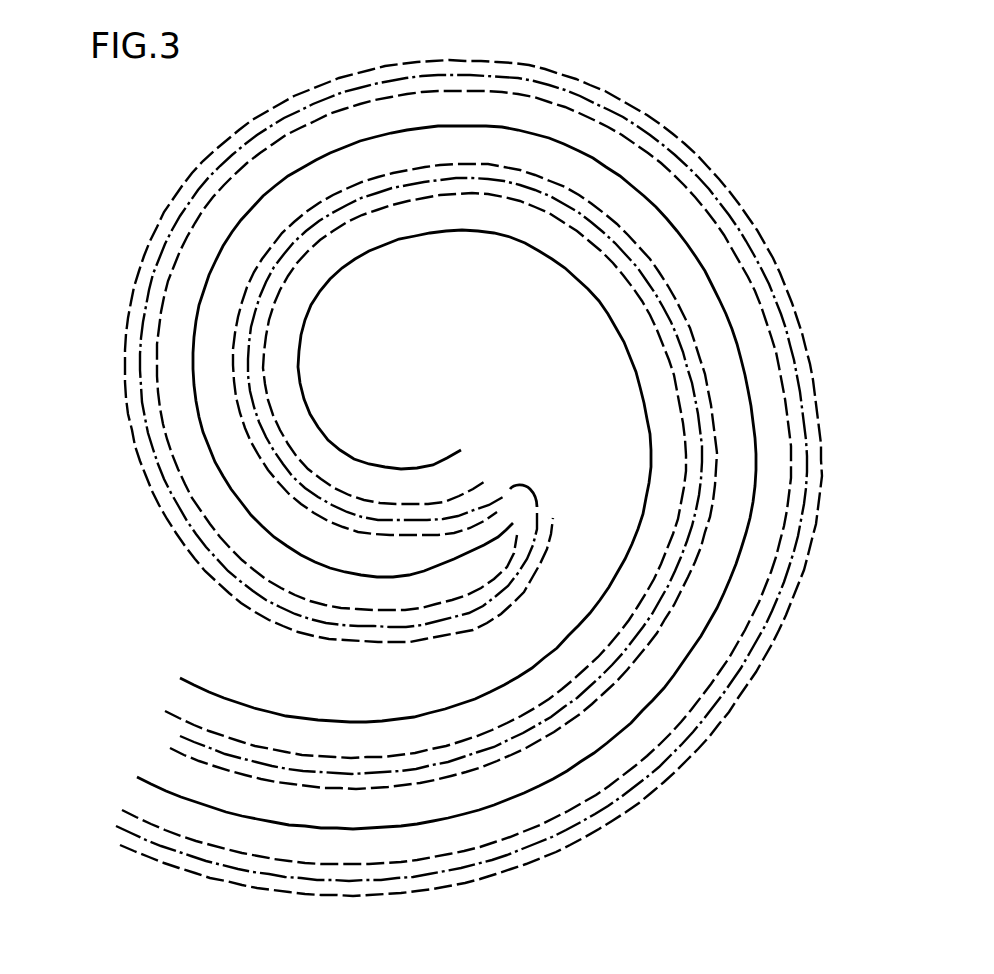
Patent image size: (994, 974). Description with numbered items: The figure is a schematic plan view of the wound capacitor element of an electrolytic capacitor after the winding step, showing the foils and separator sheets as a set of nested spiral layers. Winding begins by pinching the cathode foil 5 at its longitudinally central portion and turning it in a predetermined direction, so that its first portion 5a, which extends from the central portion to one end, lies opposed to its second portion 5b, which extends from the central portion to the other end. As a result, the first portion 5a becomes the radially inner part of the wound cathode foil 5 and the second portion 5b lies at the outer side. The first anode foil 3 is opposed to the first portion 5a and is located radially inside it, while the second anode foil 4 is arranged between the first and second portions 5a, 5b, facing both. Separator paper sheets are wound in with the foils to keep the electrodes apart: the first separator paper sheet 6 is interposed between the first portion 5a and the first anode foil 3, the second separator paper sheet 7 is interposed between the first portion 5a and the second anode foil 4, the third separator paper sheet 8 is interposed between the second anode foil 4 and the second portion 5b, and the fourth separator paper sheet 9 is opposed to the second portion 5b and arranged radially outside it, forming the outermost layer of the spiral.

The first anode foil 3 is at (195, 679).
The second anode foil 4 is at (148, 779).
The cathode foil 5 is at (428, 478).
The first portion 5a is at (167, 736).
The second portion 5b is at (125, 828).
The first separator paper sheet 6 is at (191, 714).
The second separator paper sheet 7 is at (160, 744).
The third separator paper sheet 8 is at (133, 812).
The fourth separator paper sheet 9 is at (125, 850).